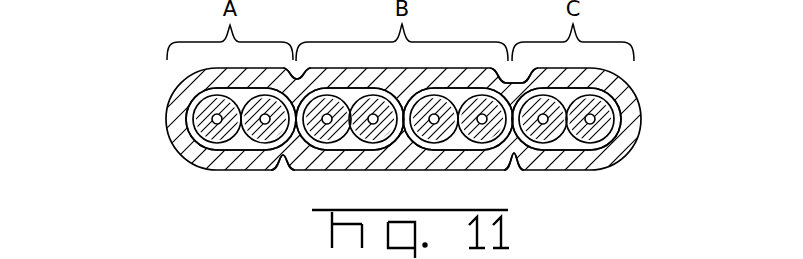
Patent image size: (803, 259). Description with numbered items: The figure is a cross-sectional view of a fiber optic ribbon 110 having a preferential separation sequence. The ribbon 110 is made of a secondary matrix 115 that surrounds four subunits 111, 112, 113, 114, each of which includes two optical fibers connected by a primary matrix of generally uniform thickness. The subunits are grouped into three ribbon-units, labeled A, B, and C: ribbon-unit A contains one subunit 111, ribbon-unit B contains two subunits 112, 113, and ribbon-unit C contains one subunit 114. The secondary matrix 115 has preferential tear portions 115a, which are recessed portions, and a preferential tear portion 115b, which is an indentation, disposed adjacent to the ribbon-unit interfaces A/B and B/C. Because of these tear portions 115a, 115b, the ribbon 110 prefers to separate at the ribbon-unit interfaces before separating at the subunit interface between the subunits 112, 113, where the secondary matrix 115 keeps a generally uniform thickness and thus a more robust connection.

The ribbon 110 is at (407, 126).
The subunit 111 is at (235, 152).
The subunit 112 is at (336, 136).
The subunit 113 is at (472, 150).
The subunit 114 is at (606, 123).
The secondary matrix 115 is at (636, 102).
The preferential tear portions 115a is at (288, 80).
The preferential tear portion 115b is at (513, 157).